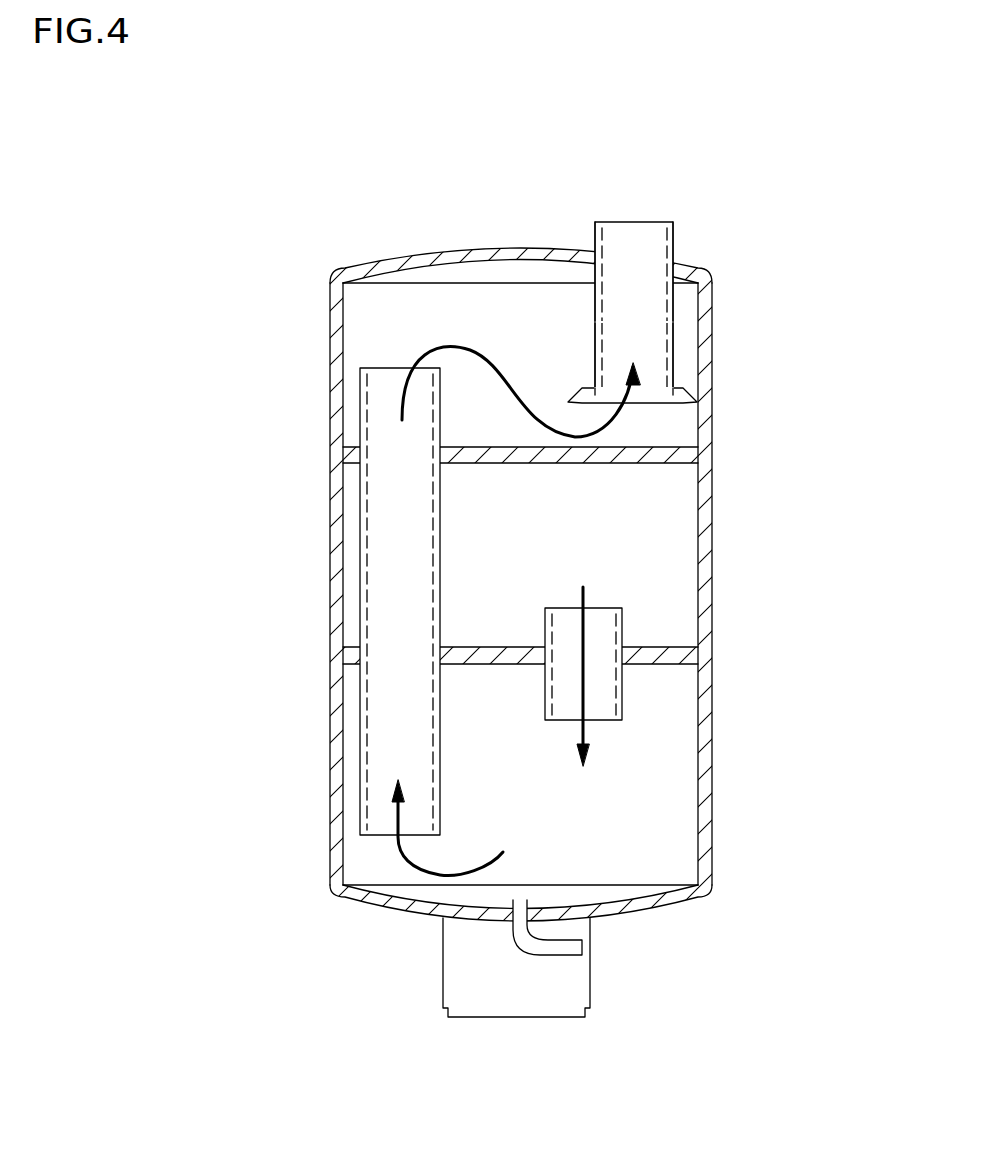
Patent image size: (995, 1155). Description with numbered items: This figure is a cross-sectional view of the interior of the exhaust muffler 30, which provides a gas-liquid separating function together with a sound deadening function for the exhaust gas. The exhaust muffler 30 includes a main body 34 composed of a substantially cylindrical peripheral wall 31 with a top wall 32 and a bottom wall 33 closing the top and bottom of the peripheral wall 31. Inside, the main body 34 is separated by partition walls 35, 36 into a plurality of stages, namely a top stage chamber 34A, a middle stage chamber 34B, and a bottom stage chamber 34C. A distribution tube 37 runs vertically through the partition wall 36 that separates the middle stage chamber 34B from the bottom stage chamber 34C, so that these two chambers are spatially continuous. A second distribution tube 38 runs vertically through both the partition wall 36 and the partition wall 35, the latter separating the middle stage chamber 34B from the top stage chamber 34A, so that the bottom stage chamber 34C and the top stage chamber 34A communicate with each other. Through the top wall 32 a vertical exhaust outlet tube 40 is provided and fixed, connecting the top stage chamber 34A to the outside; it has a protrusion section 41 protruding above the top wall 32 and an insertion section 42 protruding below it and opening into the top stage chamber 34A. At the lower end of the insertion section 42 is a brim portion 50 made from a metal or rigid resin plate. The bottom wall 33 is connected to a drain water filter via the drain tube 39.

The exhaust muffler 30 is at (497, 612).
The peripheral wall 31 is at (712, 536).
The top wall 32 is at (448, 250).
The bottom wall 33 is at (630, 917).
The main body 34 is at (720, 508).
The top stage chamber 34A is at (688, 358).
The middle stage chamber 34B is at (675, 572).
The bottom stage chamber 34C is at (668, 767).
The partition wall 35 is at (653, 455).
The partition wall 36 is at (662, 658).
The distribution tube 37 is at (598, 705).
The distribution tube 38 is at (377, 712).
The drain tube 39 is at (553, 950).
The exhaust outlet tube 40 is at (725, 284).
The protrusion section 41 is at (673, 233).
The insertion section 42 is at (688, 322).
The brim portion 50 is at (688, 402).